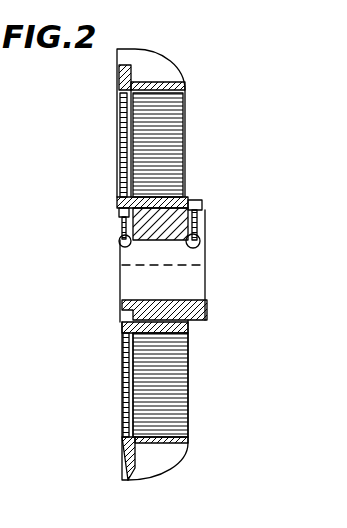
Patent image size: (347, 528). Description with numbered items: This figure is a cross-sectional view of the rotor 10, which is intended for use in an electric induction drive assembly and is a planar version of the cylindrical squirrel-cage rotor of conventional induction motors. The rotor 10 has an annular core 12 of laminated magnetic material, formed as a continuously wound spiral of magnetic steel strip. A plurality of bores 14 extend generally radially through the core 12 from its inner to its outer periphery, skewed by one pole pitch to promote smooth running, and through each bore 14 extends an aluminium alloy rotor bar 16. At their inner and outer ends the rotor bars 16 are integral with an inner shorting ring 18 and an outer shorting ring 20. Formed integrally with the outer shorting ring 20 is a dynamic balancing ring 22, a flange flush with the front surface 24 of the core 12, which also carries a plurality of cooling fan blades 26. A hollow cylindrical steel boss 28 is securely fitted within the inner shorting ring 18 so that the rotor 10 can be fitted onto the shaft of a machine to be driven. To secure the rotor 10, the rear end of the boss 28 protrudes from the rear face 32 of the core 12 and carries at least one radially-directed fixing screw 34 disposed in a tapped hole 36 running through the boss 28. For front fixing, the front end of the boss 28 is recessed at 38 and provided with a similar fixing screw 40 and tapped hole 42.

The rotor 10 is at (226, 269).
The annular core 12 is at (185, 157).
The bores 14 is at (128, 134).
The rotor bar 16 is at (122, 172).
The inner shorting ring 18 is at (185, 197).
The outer shorting ring 20 is at (185, 85).
The dynamic balancing ring 22 is at (121, 74).
The front surface 24 is at (122, 362).
The cooling fan blades 26 is at (145, 63).
The boss 28 is at (196, 288).
The rear face 32 is at (185, 125).
The fixing screw 34 is at (203, 210).
The tapped hole 36 is at (206, 244).
The recess 38 is at (121, 318).
The fixing screw 40 is at (119, 214).
The tapped hole 42 is at (125, 246).